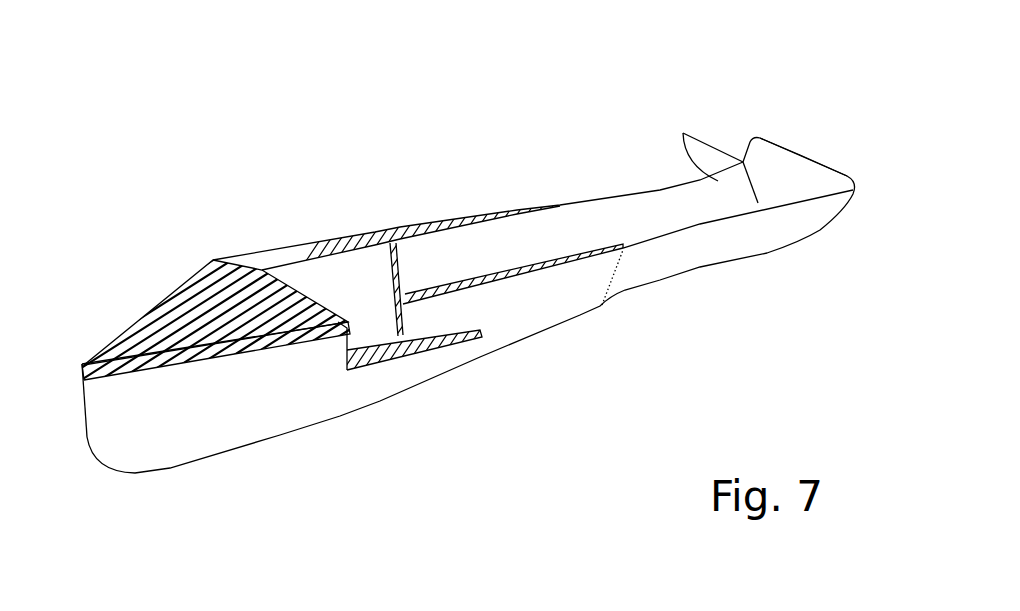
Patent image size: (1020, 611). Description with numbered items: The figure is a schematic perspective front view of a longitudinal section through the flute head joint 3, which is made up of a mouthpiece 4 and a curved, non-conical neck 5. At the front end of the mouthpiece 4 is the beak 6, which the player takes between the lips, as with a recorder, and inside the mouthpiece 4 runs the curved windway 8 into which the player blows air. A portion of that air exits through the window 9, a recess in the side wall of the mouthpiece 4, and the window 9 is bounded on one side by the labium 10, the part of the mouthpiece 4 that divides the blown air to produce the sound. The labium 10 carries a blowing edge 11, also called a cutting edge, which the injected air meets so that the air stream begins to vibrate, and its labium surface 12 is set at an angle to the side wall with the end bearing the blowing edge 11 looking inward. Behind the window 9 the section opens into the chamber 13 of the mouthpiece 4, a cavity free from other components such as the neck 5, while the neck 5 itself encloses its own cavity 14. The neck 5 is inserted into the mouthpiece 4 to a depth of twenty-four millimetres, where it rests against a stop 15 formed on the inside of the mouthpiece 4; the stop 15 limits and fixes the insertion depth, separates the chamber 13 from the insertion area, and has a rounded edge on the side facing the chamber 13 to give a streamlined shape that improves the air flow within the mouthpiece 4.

The flute head joint 3 is at (508, 102).
The mouthpiece 4 is at (361, 130).
The neck 5 is at (764, 103).
The beak 6 is at (127, 440).
The windway 8 is at (213, 343).
The window 9 is at (376, 333).
The labium 10 is at (453, 327).
The blowing edge 11 is at (400, 312).
The labium surface 12 is at (420, 320).
The chamber 13 is at (330, 277).
The cavity 14 is at (706, 208).
The stop 15 is at (378, 247).